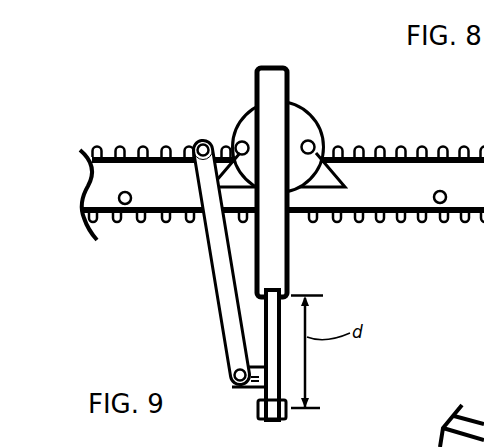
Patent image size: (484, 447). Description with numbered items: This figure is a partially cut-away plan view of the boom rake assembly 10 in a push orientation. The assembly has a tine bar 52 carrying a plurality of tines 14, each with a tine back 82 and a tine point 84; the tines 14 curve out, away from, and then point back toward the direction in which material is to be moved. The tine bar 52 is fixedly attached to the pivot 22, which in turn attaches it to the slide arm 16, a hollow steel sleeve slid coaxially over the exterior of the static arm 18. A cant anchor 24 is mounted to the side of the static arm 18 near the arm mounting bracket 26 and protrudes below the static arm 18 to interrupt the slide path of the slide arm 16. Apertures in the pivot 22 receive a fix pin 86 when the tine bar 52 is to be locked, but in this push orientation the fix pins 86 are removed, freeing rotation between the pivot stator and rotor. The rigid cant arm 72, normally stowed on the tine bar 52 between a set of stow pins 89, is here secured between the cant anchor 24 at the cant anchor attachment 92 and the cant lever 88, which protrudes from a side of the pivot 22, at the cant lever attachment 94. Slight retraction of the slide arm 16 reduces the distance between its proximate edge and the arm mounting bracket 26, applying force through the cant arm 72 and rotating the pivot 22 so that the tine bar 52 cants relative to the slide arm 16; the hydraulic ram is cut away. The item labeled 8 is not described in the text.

In FIG. 9, the boom rake assembly 10 is at (168, 58).
In FIG. 9, the tines 14 is at (470, 141).
In FIG. 9, the slide arm 16 is at (270, 76).
In FIG. 9, the static arm 18 is at (272, 352).
In FIG. 9, the pivot 22 is at (301, 126).
In FIG. 9, the cant anchor 24 is at (245, 389).
In FIG. 9, the arm mounting bracket 26 is at (290, 430).
In FIG. 9, the tine bar 52 is at (101, 193).
In FIG. 9, the cant arm 72 is at (222, 260).
In FIG. 9, the tine backs 82 is at (109, 243).
In FIG. 9, the tine points 84 is at (117, 130).
In FIG. 8, the tine points 84 is at (450, 8).
In FIG. 9, the fix pin 86 is at (241, 141).
In FIG. 9, the cant lever 88 is at (203, 143).
In FIG. 9, the stow pins 89 is at (132, 199).
In FIG. 9, the cant anchor attachment 92 is at (237, 378).
In FIG. 9, the cant lever attachment 94 is at (194, 143).
In FIG. 8, the belt end (FIG. 8) 8 is at (473, 403).